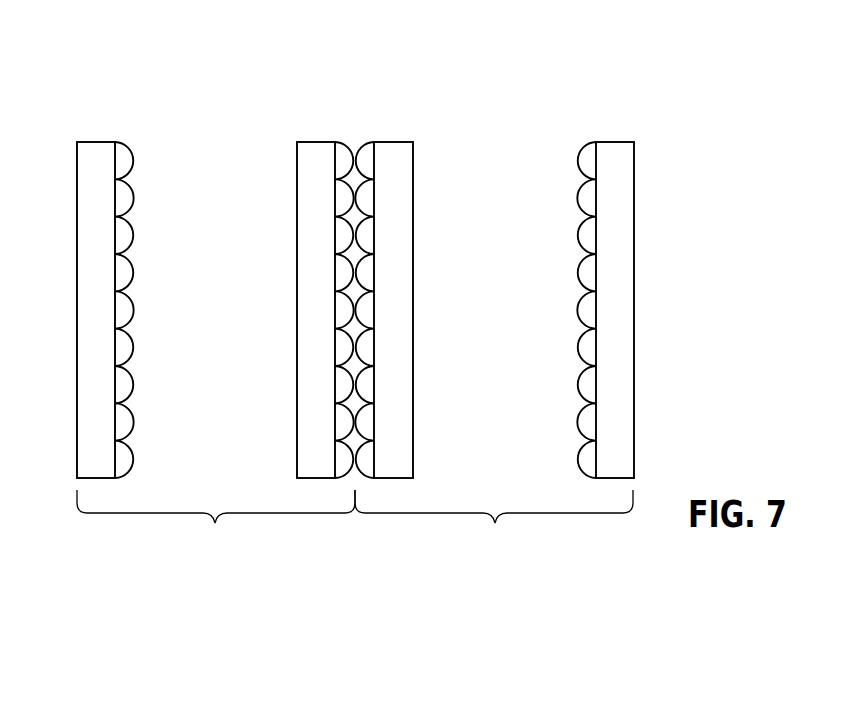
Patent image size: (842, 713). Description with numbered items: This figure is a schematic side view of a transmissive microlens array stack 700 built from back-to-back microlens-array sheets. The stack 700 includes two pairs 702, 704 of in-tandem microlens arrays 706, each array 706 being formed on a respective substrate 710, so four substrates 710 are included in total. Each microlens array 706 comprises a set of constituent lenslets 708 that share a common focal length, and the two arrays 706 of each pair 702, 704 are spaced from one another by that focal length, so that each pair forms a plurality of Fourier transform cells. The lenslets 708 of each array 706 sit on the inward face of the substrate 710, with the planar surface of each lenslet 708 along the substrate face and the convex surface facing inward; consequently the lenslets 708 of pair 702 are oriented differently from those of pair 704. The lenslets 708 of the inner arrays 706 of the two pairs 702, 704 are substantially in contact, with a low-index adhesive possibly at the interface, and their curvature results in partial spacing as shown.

The transmissive microlens array stack 700 is at (602, 57).
The first array pair 702 is at (216, 524).
The second array pair 704 is at (494, 524).
The microlens array 706 is at (130, 142).
The lenslet 708 is at (133, 425).
The substrate 710 is at (77, 253).